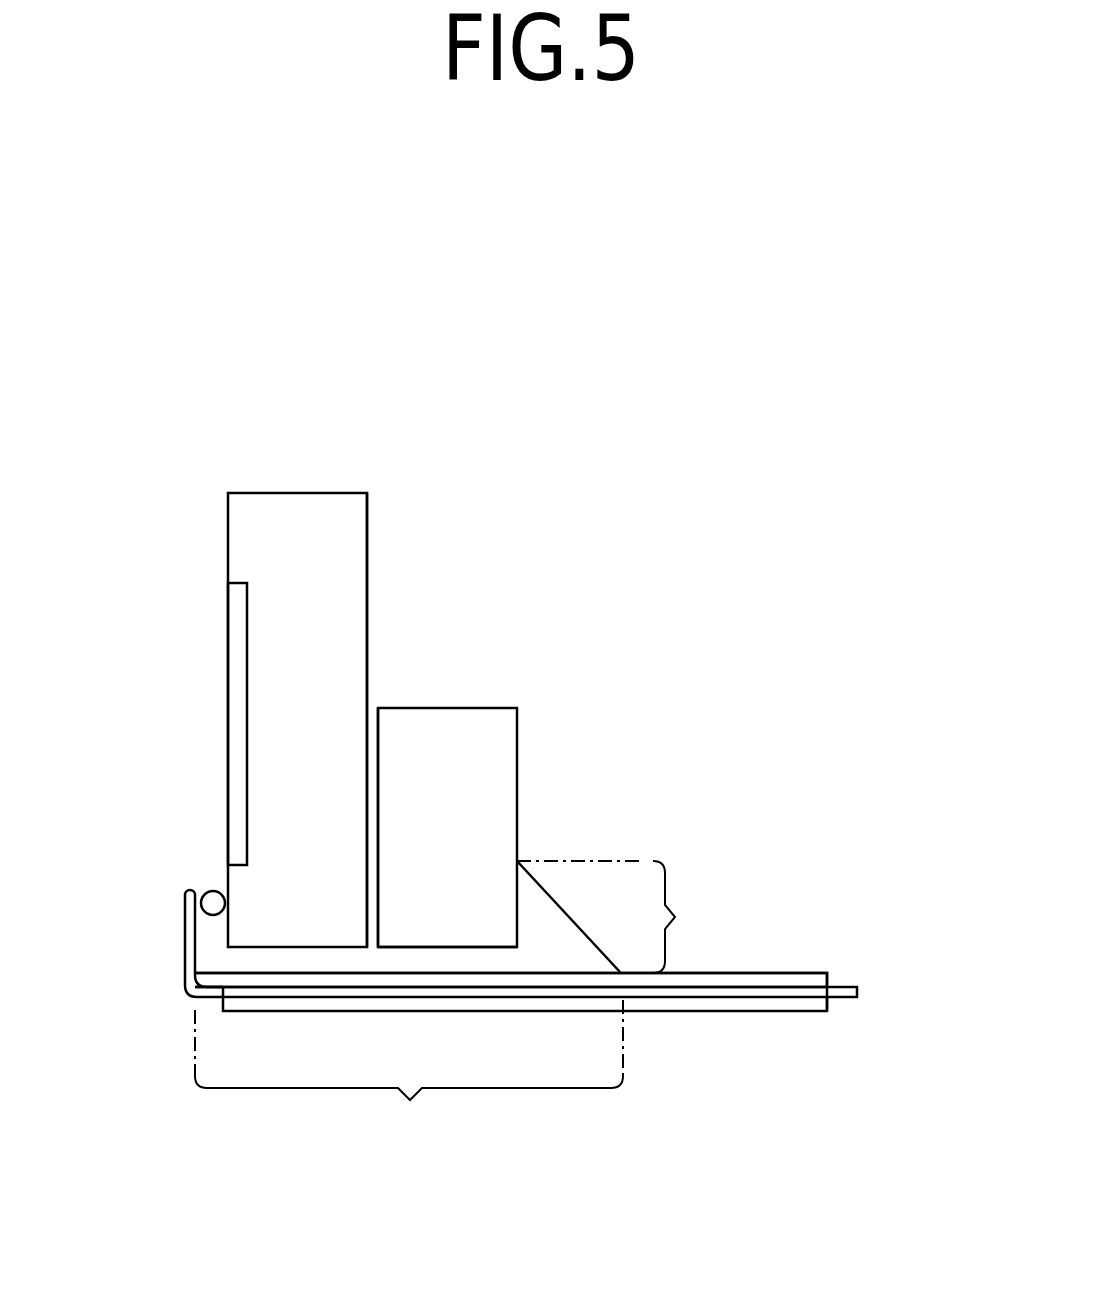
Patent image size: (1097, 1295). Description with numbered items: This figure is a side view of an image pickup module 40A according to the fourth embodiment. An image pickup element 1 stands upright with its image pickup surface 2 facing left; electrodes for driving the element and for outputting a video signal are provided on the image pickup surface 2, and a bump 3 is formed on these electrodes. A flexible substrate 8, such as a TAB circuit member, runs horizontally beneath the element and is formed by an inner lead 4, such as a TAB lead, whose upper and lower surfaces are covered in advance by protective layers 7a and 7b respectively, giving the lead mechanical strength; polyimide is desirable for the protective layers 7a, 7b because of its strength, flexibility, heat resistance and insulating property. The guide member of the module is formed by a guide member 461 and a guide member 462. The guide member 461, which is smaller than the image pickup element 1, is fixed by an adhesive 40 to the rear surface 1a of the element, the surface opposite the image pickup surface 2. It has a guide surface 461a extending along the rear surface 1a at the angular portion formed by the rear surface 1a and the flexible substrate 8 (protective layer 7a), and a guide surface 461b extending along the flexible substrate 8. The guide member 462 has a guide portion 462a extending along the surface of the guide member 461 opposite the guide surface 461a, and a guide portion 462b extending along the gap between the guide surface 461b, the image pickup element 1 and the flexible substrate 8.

The image pickup element 1 is at (247, 511).
The rear surface 1a is at (368, 525).
The image pickup surface 2 is at (228, 634).
The bump 3 is at (210, 890).
The inner lead 4 is at (185, 955).
The adhesive 40 is at (511, 875).
The image pickup module 40A is at (727, 445).
The guide member 461 is at (450, 728).
The guide surface 461a is at (381, 795).
The guide surface 461b is at (450, 943).
The guide member 462 is at (740, 940).
The guide portion 462a is at (654, 917).
The guide portion 462b is at (642, 1127).
The protective layer 7a is at (800, 972).
The protective layer 7b is at (767, 1012).
The flexible substrate 8 is at (560, 1001).